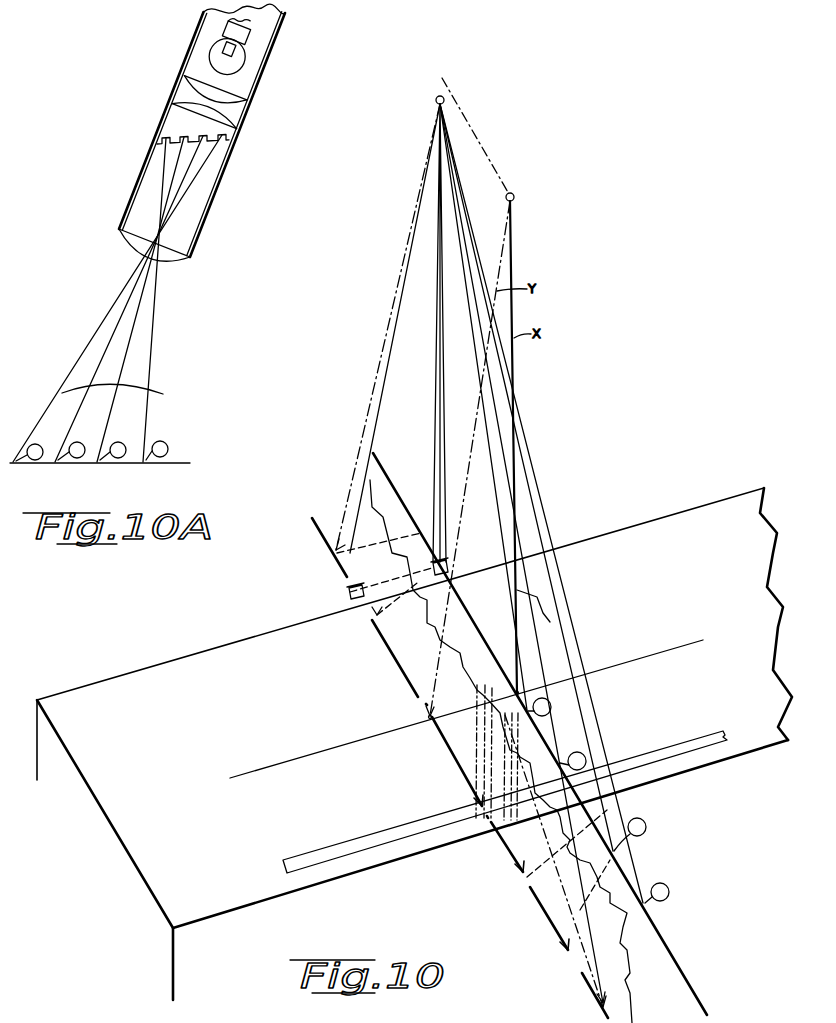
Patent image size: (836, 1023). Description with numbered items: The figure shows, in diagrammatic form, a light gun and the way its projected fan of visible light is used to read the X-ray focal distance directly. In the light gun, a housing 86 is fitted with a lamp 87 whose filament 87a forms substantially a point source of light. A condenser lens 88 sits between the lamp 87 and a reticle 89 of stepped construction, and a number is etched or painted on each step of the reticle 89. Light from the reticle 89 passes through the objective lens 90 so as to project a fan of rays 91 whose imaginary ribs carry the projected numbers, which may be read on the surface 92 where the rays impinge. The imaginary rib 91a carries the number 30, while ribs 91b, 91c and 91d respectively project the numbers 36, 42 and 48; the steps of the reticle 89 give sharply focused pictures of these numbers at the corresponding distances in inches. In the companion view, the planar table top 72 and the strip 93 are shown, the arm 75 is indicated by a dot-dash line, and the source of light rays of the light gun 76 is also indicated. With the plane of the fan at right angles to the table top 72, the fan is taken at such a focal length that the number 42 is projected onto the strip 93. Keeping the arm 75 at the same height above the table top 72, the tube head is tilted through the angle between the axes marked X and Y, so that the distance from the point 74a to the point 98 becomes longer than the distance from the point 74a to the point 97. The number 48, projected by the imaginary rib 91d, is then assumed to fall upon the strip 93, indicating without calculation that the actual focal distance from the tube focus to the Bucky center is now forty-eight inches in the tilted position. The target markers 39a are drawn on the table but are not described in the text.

In FIG. 10, the table top 72 is at (243, 911).
In FIG. 10, the point 74a is at (514, 196).
In FIG. 10, the arm 75 is at (481, 140).
In FIG. 10, the light gun 76 is at (436, 99).
In FIG. 10A, the number 30 is at (120, 293).
In FIG. 10, the number 30 is at (657, 893).
In FIG. 10A, the number 36 is at (132, 293).
In FIG. 10, the number 36 is at (630, 834).
In FIG. 10A, the number 42 is at (143, 293).
In FIG. 10, the number 42 is at (573, 761).
In FIG. 10A, the number 48 is at (157, 294).
In FIG. 10, the number 48 is at (539, 707).
In FIG. 10, the target marker 39a is at (347, 590).
In FIG. 10A, the fan of rays 91 is at (148, 395).
In FIG. 10A, the imaginary rib 91a is at (84, 352).
In FIG. 10, the imaginary rib 91a is at (576, 637).
In FIG. 10A, the imaginary rib 91b is at (117, 327).
In FIG. 10, the imaginary rib 91b is at (560, 620).
In FIG. 10A, the imaginary rib 91c is at (133, 332).
In FIG. 10, the imaginary rib 91c is at (532, 600).
In FIG. 10A, the imaginary rib 91d is at (152, 355).
In FIG. 10, the imaginary rib 91d is at (508, 565).
In FIG. 10, the strip 93 is at (318, 860).
In FIG. 10, the point 97 is at (514, 691).
In FIG. 10, the point 98 is at (426, 717).
In FIG. 10A, the housing 86 is at (260, 80).
In FIG. 10A, the lamp 87 is at (246, 55).
In FIG. 10A, the filament 87a is at (222, 56).
In FIG. 10A, the condenser lens 88 is at (235, 108).
In FIG. 10A, the reticle 89 is at (229, 147).
In FIG. 10A, the objective lens 90 is at (168, 261).
In FIG. 10A, the surface 92 is at (128, 465).